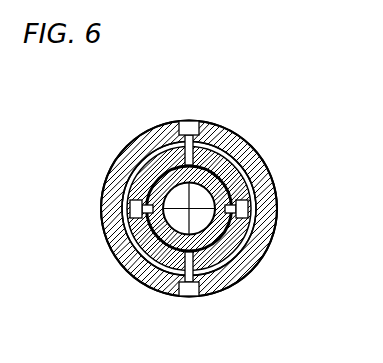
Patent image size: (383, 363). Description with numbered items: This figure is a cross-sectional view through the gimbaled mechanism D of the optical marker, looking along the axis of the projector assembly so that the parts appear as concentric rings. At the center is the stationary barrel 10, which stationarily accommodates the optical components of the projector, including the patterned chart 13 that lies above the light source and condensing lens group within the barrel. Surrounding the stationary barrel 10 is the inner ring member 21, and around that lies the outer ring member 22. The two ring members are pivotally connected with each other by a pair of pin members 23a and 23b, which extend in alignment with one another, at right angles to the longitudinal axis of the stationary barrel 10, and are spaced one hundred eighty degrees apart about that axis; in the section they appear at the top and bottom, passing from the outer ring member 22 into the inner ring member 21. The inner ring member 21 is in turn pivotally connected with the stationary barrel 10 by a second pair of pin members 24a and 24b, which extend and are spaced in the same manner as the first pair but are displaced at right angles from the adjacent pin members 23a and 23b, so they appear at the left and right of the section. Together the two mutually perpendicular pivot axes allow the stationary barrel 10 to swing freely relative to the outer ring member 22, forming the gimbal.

The gimbaled mechanism D is at (110, 168).
The stationary barrel 10 is at (140, 272).
The patterned chart 13 is at (232, 168).
The inner ring member 21 is at (213, 152).
The outer ring member 22 is at (240, 270).
The pin member 23a is at (188, 121).
The pin member 23b is at (190, 296).
The pin member 24a is at (129, 217).
The pin member 24b is at (248, 208).